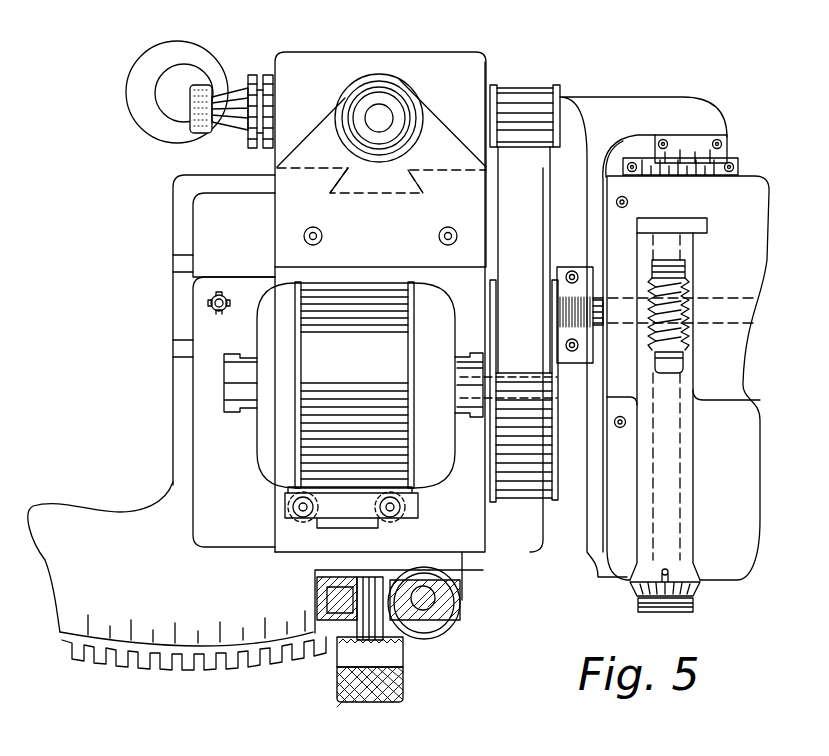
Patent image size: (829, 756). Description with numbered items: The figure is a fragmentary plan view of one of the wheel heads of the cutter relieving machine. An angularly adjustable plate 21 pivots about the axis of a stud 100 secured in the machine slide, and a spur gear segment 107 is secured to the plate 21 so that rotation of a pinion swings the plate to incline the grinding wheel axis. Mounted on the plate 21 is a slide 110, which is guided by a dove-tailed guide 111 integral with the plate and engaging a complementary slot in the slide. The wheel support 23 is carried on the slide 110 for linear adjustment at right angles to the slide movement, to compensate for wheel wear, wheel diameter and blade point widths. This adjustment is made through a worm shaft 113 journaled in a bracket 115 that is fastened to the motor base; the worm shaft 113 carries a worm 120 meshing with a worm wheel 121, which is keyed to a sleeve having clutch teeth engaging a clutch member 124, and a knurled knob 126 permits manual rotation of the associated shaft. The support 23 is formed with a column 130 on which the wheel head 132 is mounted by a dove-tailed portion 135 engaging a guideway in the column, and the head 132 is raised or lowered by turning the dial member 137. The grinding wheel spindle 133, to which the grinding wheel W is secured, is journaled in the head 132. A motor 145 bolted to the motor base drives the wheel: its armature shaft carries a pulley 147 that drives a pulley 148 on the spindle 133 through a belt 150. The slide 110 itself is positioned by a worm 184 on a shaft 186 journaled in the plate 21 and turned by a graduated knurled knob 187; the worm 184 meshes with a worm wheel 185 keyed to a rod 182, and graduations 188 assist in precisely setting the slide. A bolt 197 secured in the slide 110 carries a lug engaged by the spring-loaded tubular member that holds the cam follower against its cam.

The stud 100 is at (167, 84).
The grinding wheel W is at (197, 132).
The grinding wheel spindle 133 is at (238, 93).
The wheel head 132 is at (460, 75).
The dial member 137 is at (380, 100).
The dove-tailed portion 135 is at (380, 182).
The slide 110 is at (200, 232).
The dove-tailed guide 111 is at (187, 318).
The wheel support 23 is at (203, 435).
The bolt 197 is at (208, 302).
The motor 145 is at (265, 478).
The pulley 148 is at (560, 110).
The column 130 is at (483, 268).
The pulley 147 is at (556, 488).
The belt 150 is at (537, 173).
The graduations 188 is at (720, 153).
The shaft 186 is at (680, 542).
The knurled knob 187 is at (693, 605).
The rod 182 is at (625, 293).
The worm wheel 185 is at (680, 252).
The worm 184 is at (687, 284).
The plate 21 is at (107, 520).
The spur gear segment 107 is at (200, 667).
The worm wheel 121 is at (313, 592).
The bracket 115 is at (462, 590).
The worm shaft 113 is at (428, 605).
The worm 120 is at (437, 613).
The clutch member 124 is at (395, 656).
The knurled knob 126 is at (410, 687).